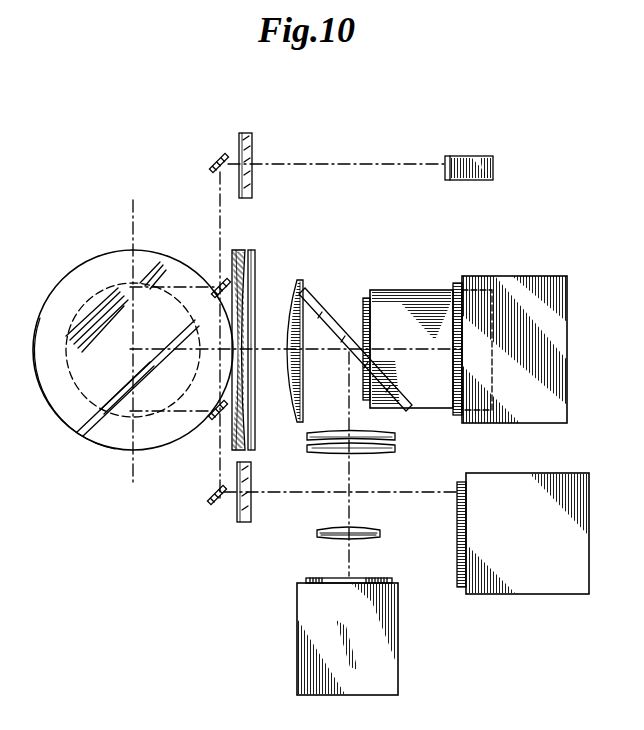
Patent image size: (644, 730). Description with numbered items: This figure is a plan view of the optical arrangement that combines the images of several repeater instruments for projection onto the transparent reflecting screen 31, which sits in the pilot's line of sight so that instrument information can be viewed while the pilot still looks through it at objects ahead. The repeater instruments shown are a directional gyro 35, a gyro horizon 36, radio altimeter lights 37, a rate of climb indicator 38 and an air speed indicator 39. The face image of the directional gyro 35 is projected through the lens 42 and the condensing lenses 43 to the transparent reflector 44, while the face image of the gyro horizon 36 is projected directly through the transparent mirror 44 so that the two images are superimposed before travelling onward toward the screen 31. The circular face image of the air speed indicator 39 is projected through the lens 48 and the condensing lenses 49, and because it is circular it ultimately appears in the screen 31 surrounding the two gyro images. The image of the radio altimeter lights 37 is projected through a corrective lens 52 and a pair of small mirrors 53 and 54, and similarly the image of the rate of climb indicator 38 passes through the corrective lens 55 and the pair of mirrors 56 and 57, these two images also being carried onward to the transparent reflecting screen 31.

The transparent reflecting screen 31 is at (80, 272).
The directional gyro 35 is at (303, 664).
The gyro horizon 36 is at (560, 336).
The radio altimeter lights 37 is at (493, 163).
The rate of climb indicator 38 is at (522, 588).
The air speed indicator 39 is at (424, 294).
The lens 42 is at (377, 527).
The condensing lenses 43 is at (400, 441).
The transparent reflector 44 is at (306, 300).
The lens 48 is at (300, 406).
The condensing lenses 49 is at (252, 250).
The corrective lens 52 is at (252, 150).
The small mirror 53 is at (216, 158).
The small mirror 54 is at (210, 271).
The corrective lens 55 is at (239, 524).
The mirror 56 is at (212, 498).
The mirror 57 is at (218, 422).